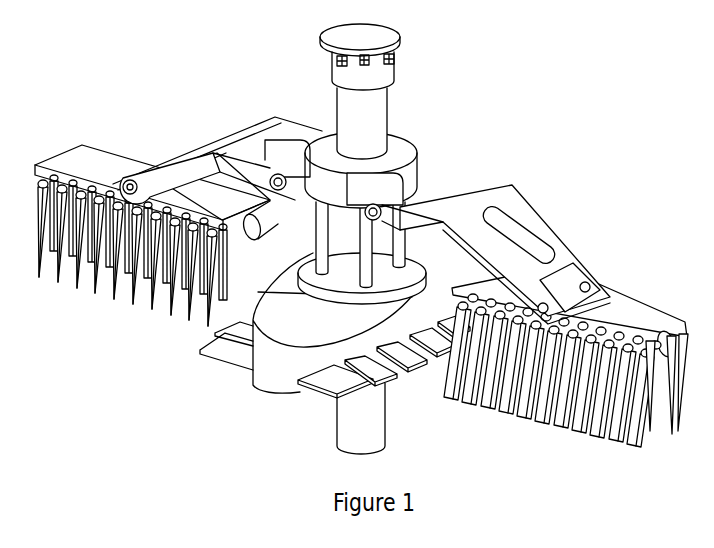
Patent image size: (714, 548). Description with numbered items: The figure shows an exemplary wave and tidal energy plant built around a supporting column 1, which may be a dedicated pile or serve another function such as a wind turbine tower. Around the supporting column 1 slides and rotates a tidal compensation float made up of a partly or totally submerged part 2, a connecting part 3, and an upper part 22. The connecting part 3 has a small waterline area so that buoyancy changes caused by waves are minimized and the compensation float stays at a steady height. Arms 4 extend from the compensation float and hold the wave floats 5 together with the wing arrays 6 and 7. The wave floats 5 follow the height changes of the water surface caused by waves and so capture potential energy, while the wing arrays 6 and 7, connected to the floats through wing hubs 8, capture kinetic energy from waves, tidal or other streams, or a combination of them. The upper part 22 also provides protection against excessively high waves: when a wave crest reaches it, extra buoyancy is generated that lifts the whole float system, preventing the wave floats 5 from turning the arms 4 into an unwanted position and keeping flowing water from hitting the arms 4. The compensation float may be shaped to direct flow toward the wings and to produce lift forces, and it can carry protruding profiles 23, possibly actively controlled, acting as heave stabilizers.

The supporting column 1 is at (353, 415).
The submerged part 2 is at (317, 315).
The connecting part 3 is at (322, 243).
The arms 4 is at (527, 217).
The wave floats 5 is at (605, 312).
The wing array 6 is at (672, 409).
The wing array 7 is at (620, 431).
The wing hubs 8 is at (490, 316).
The upper part 22 is at (402, 145).
The protruding profiles 23 is at (340, 380).